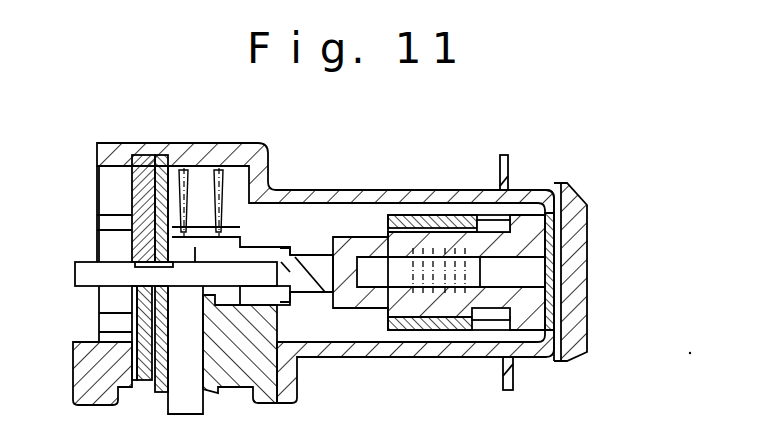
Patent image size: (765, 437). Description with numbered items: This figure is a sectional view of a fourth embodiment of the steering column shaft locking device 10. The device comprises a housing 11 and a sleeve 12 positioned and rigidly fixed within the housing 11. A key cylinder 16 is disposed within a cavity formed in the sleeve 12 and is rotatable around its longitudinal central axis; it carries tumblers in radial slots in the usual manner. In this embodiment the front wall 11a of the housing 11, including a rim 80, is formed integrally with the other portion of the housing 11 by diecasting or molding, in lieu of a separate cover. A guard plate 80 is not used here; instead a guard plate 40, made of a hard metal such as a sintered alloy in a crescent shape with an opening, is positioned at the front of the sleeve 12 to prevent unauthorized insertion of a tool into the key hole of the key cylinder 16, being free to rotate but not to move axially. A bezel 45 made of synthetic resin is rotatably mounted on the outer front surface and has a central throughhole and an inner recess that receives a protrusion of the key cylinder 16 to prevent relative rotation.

The steering column shaft locking device 10 is at (510, 148).
The housing 11 is at (409, 190).
The front wall 11a is at (555, 208).
The rim 80 is at (556, 214).
The bezel 45 is at (588, 225).
The guard plate 40 is at (552, 316).
The key cylinder 16 is at (405, 300).
The sleeve 12 is at (432, 330).